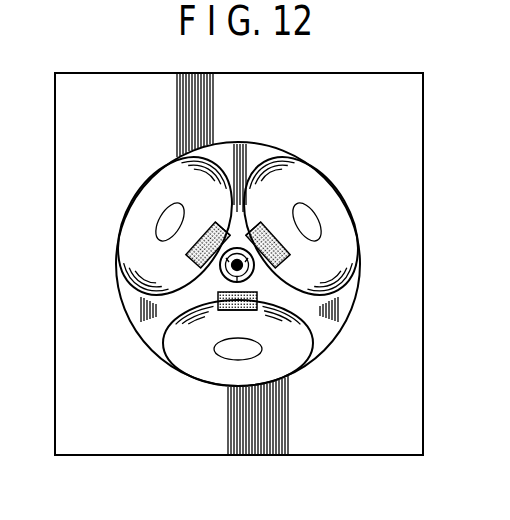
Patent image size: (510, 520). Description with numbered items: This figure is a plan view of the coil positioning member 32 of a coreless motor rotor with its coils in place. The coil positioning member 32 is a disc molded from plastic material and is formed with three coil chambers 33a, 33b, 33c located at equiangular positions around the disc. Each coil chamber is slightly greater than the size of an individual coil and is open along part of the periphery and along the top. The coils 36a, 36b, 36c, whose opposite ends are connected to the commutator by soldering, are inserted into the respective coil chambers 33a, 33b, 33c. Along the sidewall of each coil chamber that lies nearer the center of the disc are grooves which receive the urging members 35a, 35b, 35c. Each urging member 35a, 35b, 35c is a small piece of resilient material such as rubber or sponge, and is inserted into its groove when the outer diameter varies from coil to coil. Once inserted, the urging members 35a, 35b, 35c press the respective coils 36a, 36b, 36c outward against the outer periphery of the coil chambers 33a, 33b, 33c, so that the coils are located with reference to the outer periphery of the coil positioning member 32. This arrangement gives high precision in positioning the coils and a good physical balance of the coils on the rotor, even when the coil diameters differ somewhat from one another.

The coil positioning member 32 is at (150, 330).
The coil chamber 33a is at (284, 264).
The coil chamber 33b is at (265, 306).
The coil chamber 33c is at (193, 262).
The urging member 35a is at (276, 231).
The urging member 35b is at (229, 312).
The urging member 35c is at (203, 232).
The coil 36a is at (332, 208).
The coil 36b is at (285, 357).
The coil 36c is at (138, 208).